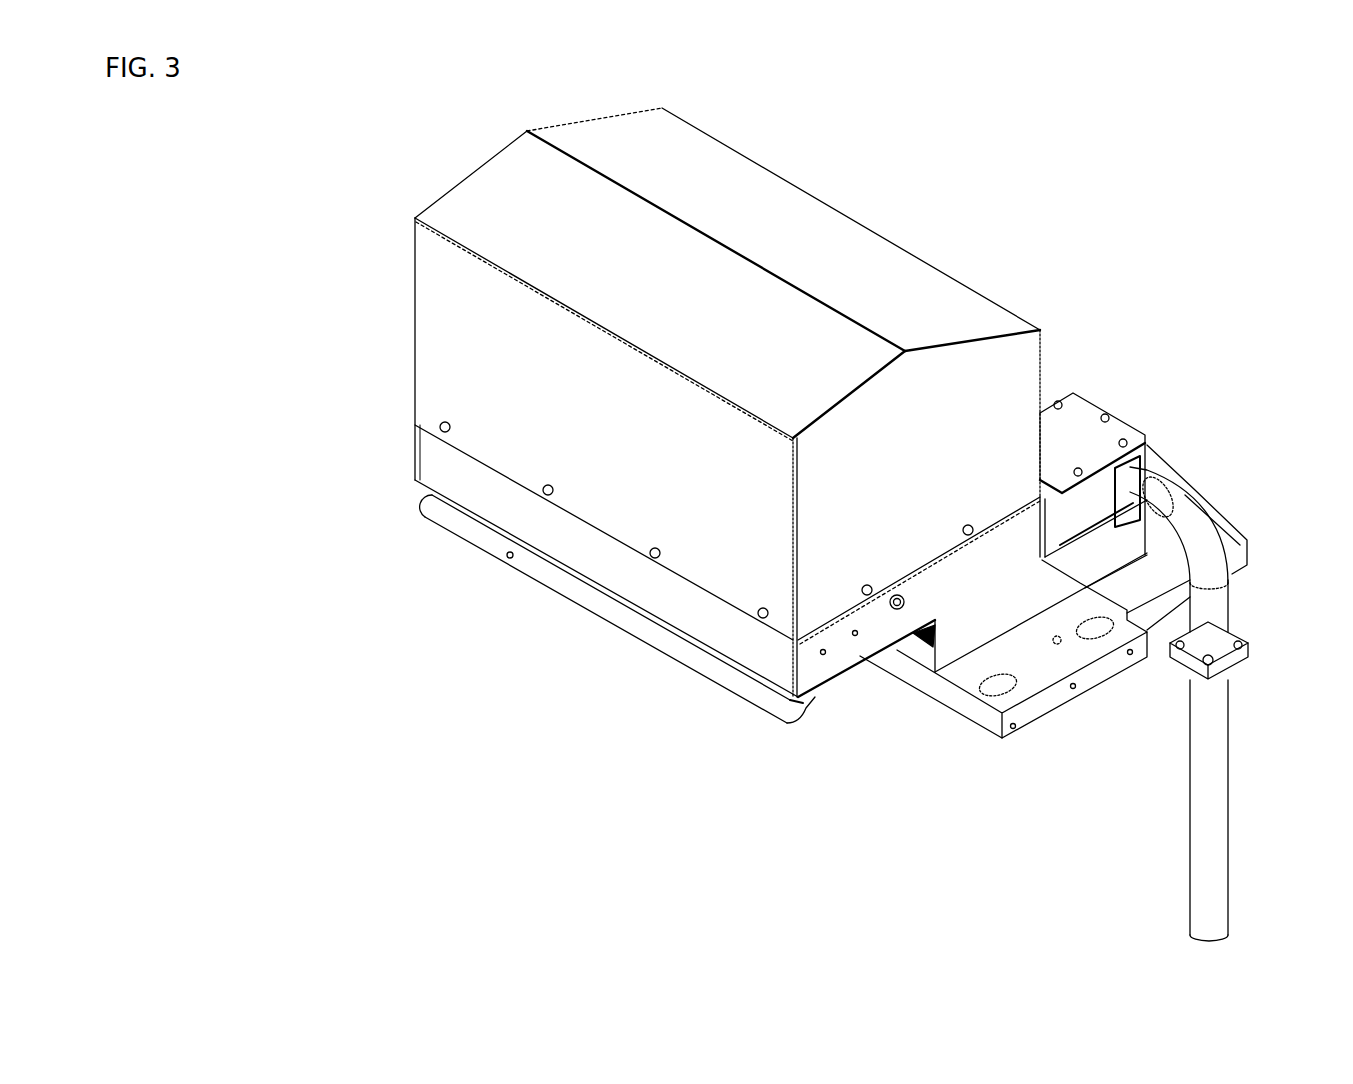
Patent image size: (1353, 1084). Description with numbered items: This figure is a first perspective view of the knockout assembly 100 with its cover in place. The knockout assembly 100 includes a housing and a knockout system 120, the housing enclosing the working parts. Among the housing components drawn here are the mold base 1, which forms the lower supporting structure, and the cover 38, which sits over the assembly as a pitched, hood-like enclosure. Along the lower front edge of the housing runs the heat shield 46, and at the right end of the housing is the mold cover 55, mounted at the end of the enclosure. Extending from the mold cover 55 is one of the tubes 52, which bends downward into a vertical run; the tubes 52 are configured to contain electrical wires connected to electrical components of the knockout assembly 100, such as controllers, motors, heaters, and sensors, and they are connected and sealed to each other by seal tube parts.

The knockout assembly 100 is at (290, 94).
The cover 38 is at (468, 177).
The mold cover 55 is at (1121, 420).
The heat shield 46 is at (690, 670).
The mold base 1 is at (1028, 714).
The tubes 52 is at (1228, 735).
The knockout system 120 is at (516, 740).